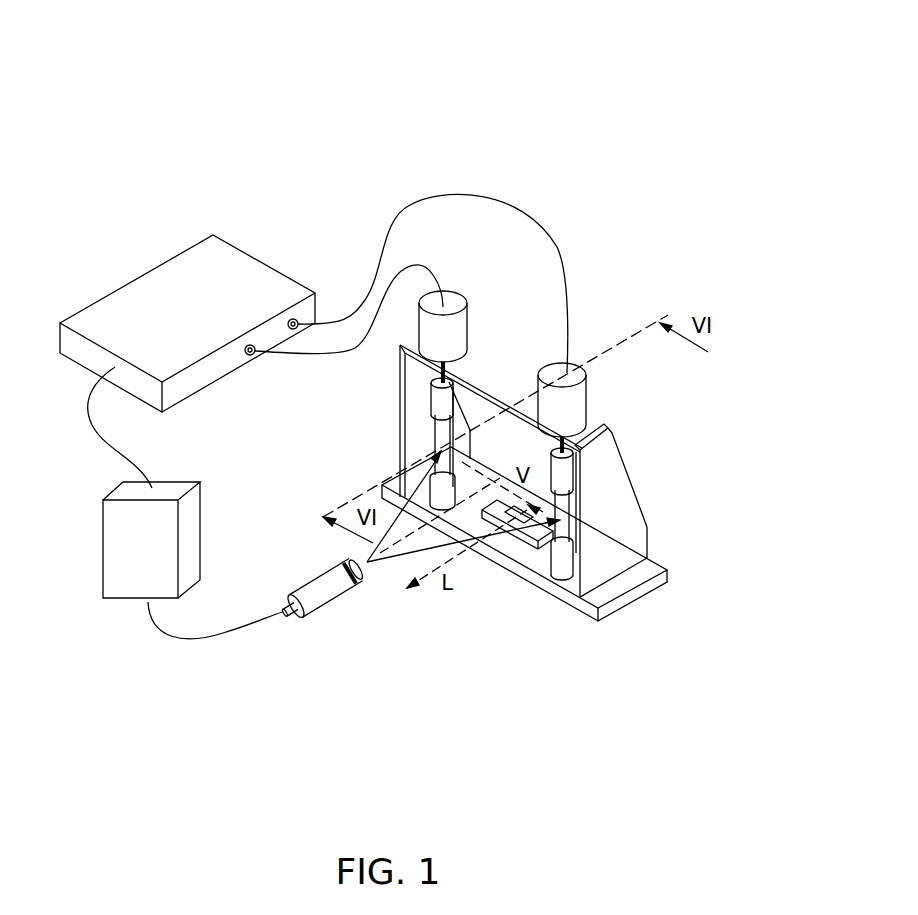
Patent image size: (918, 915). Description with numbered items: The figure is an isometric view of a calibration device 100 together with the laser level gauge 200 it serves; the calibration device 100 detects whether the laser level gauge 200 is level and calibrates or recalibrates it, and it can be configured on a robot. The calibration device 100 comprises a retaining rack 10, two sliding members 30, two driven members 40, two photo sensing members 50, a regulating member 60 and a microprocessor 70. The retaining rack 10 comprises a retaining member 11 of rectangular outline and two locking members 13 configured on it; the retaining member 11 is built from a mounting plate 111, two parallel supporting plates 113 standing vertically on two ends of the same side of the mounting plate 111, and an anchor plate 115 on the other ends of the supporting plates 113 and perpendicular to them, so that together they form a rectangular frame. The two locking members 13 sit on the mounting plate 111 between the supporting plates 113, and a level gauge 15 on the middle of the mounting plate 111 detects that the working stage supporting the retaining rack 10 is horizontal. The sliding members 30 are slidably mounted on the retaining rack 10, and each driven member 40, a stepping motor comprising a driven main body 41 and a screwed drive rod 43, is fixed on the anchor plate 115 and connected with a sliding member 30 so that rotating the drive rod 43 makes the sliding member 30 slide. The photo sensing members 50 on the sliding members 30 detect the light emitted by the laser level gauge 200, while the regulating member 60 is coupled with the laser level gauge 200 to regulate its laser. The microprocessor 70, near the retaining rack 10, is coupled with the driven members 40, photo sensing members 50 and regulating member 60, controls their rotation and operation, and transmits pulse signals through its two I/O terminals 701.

The calibration device 100 is at (305, 63).
The microprocessor 70 is at (155, 288).
The I/O terminals 701 is at (293, 330).
The driven member 40 is at (464, 323).
The driven main body 41 is at (412, 345).
The drive rod 43 is at (440, 333).
The sliding member 30 is at (428, 399).
The photo sensing member 50 is at (436, 449).
The locking member 13 is at (555, 575).
The level gauge 15 is at (523, 537).
The retaining rack 10 is at (561, 514).
The retaining member 11 is at (561, 512).
The mounting plate 111 is at (650, 567).
The supporting plate 113 is at (618, 510).
The anchor plate 115 is at (639, 428).
The regulating member 60 is at (125, 570).
The laser level gauge 200 is at (323, 593).